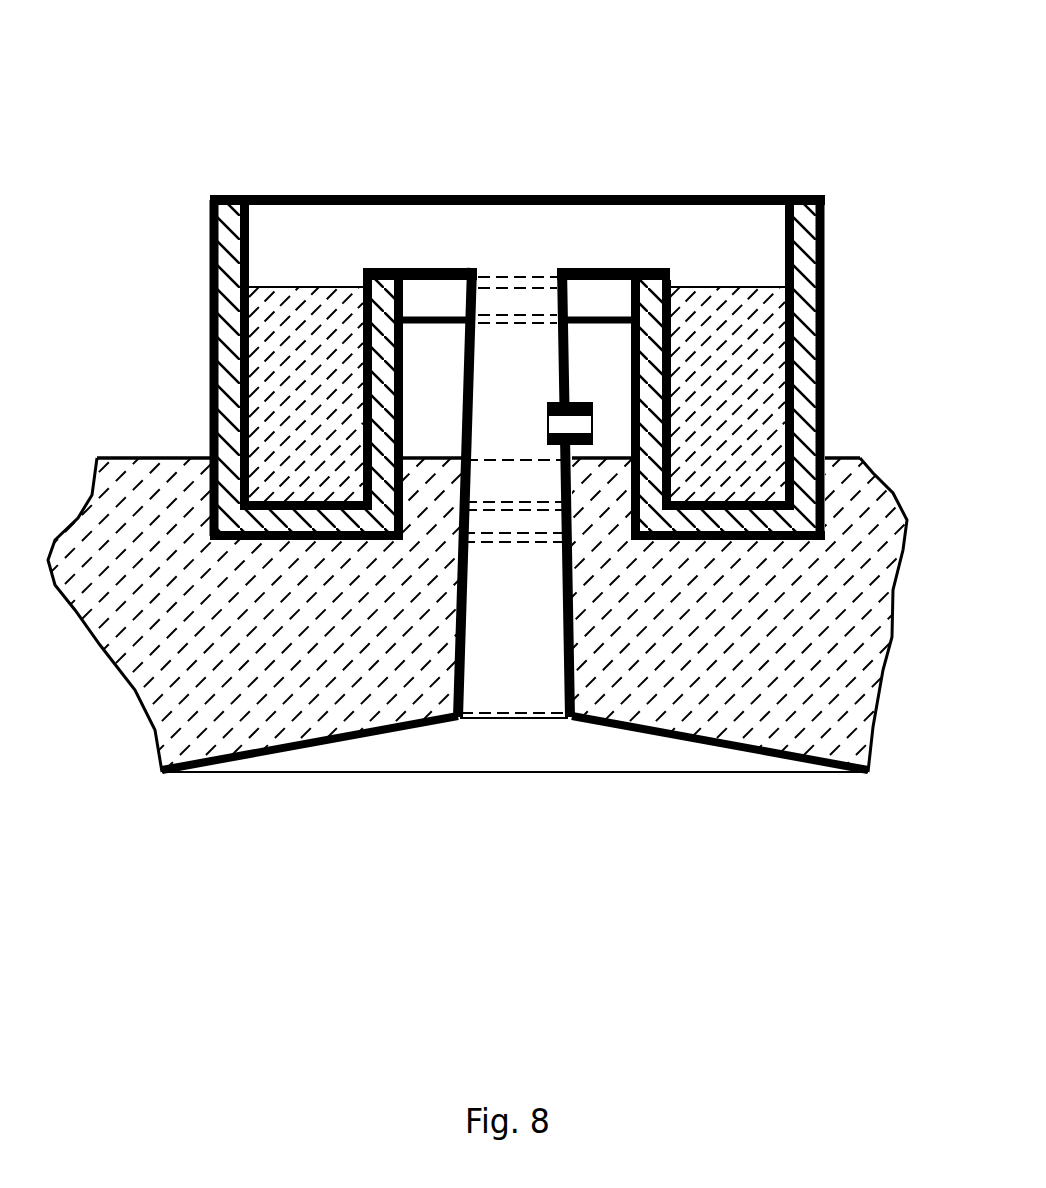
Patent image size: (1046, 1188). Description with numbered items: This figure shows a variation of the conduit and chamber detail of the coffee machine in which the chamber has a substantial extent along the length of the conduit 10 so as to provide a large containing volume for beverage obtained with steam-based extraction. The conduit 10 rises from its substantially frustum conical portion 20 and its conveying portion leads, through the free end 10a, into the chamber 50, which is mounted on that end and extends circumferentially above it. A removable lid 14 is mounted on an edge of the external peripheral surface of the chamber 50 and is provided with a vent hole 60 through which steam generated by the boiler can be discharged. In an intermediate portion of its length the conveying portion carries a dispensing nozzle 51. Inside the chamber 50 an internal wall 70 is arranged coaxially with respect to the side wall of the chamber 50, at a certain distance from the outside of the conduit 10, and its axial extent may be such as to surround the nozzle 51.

The conduit 10 is at (527, 703).
The free end 10a is at (520, 268).
The removable lid 14 is at (644, 195).
The frustum conical portion 20 is at (282, 757).
The chamber 50 is at (210, 265).
The dispensing nozzle 51 is at (625, 423).
The vent hole 60 is at (305, 198).
The internal wall 70 is at (672, 333).